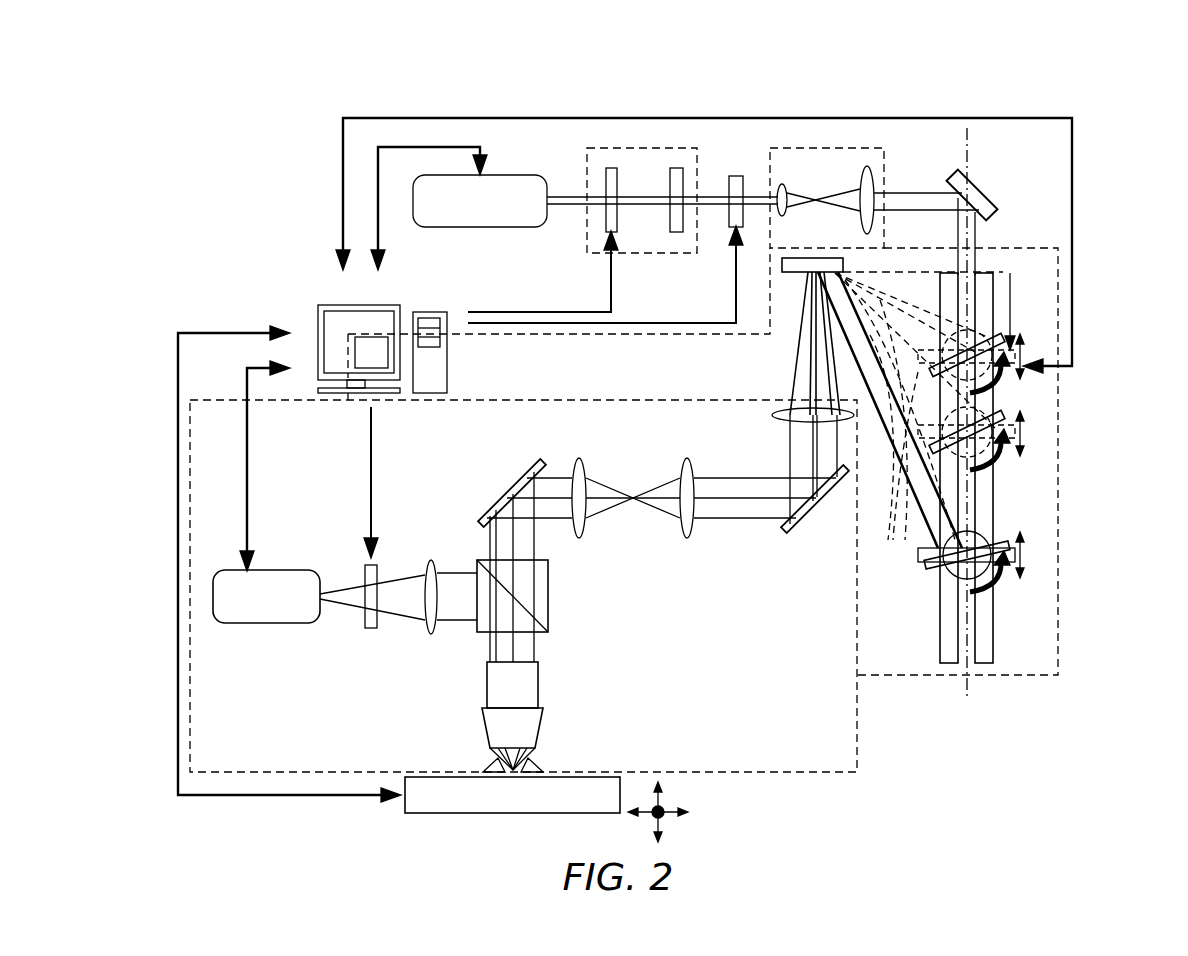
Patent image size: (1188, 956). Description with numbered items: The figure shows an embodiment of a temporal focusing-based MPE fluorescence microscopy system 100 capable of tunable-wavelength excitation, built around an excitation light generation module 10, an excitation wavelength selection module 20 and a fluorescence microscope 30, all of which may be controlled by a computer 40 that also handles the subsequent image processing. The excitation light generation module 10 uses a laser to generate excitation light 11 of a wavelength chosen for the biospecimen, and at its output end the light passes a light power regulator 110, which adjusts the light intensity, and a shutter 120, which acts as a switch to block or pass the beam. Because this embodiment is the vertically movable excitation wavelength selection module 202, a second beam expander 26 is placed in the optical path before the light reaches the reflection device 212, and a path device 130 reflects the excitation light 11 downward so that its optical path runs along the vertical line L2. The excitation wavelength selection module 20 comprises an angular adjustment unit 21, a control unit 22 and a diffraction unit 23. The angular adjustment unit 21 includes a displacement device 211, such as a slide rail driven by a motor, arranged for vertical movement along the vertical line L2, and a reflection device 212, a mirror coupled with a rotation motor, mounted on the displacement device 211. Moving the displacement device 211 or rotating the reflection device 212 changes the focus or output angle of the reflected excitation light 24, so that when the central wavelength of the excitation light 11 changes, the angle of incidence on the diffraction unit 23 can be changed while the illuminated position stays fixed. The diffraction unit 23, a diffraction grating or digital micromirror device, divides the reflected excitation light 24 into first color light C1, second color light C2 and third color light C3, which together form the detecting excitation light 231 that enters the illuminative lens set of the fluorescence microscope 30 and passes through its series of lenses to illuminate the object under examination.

The temporal focusing-based MPE fluorescence microscopy system 100 is at (1148, 79).
The excitation light generation module 10 is at (510, 174).
The excitation light 11 is at (957, 233).
The light power regulator 110 is at (647, 147).
The shutter 120 is at (733, 175).
The second beam expander 26 is at (782, 184).
The path device 130 is at (995, 192).
The diffraction unit 23 is at (815, 258).
The detecting excitation light 231 is at (728, 343).
The first color light C1 is at (812, 344).
The second color light C2 is at (817, 362).
The third color light C3 is at (806, 388).
The reflected excitation light 24 is at (877, 385).
The computer 40 is at (474, 514).
The control unit 22 is at (383, 365).
The fluorescence microscope 30 is at (857, 745).
The excitation wavelength selection module 20 is at (1009, 461).
The vertically movable excitation wavelength selection module 202 is at (1058, 650).
The angular adjustment unit 21 is at (1036, 468).
The displacement device 211 is at (1017, 575).
The reflection device 212 is at (1003, 414).
The vertical line L2 is at (967, 697).